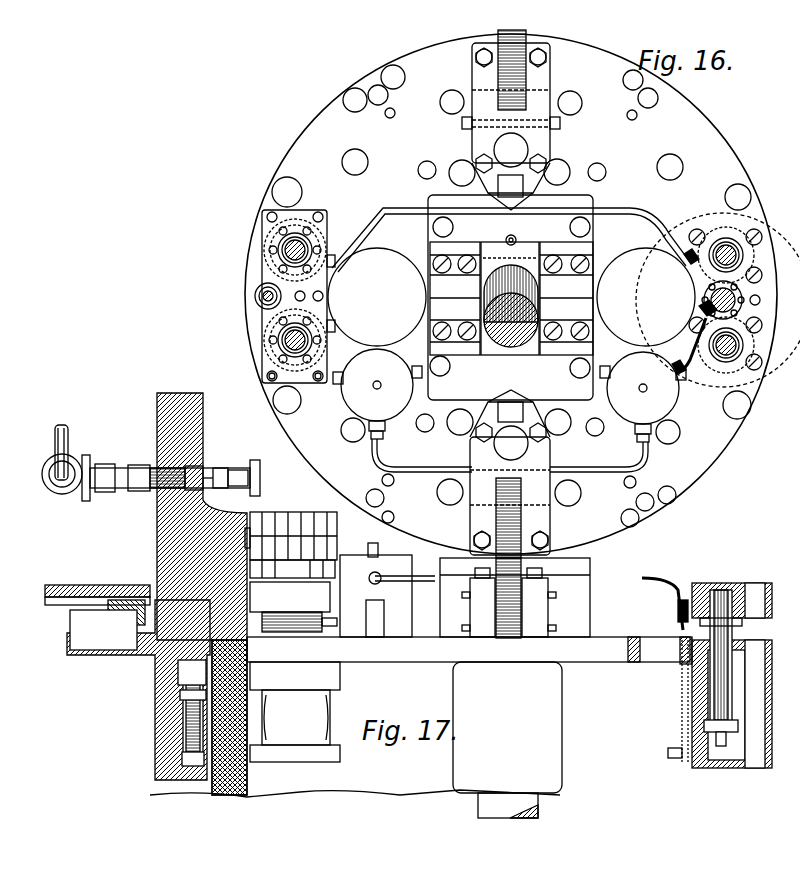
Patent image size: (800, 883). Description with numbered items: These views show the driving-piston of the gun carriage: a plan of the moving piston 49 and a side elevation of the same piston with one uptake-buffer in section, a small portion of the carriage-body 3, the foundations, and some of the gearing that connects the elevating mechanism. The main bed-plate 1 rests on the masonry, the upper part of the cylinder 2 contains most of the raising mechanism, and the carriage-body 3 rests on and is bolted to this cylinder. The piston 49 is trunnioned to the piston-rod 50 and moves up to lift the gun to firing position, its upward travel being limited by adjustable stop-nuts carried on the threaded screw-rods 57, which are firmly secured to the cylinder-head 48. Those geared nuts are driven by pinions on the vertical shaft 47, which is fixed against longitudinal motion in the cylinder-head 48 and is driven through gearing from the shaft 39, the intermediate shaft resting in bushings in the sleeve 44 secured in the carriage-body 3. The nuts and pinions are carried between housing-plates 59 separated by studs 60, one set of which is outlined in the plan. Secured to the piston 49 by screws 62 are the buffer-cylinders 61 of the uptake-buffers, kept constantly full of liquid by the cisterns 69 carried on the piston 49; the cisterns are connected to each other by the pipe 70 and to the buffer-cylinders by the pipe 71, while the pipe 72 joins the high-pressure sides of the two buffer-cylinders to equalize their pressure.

In FIG. 17, the main bed-plate 1 is at (110, 655).
In FIG. 17, the cylinder 2 is at (248, 770).
In FIG. 17, the carriage-body 3 is at (156, 532).
In FIG. 17, the shaft 39 is at (72, 440).
In FIG. 17, the sleeve 44 is at (112, 468).
In FIG. 16, the vertical shaft 47 is at (256, 294).
In FIG. 17, the vertical shaft 47 is at (262, 625).
In FIG. 17, the cylinder-head 48 is at (340, 527).
In FIG. 16, the moving piston 49 is at (720, 142).
In FIG. 17, the moving piston 49 is at (469, 650).
In FIG. 16, the piston-rod 50 is at (497, 345).
In FIG. 16, the screw-rods 57 is at (282, 340).
In FIG. 16, the housing-plates 59 is at (300, 208).
In FIG. 16, the studs 60 is at (262, 383).
In FIG. 17, the buffer-cylinders 61 is at (345, 677).
In FIG. 16, the screws 62 is at (756, 370).
In FIG. 16, the cisterns 69 is at (390, 432).
In FIG. 17, the cisterns 69 is at (387, 590).
In FIG. 16, the pipe 70 is at (590, 478).
In FIG. 16, the pipe 71 is at (690, 380).
In FIG. 17, the pipe 71 is at (648, 575).
In FIG. 16, the pipe 72 is at (398, 210).